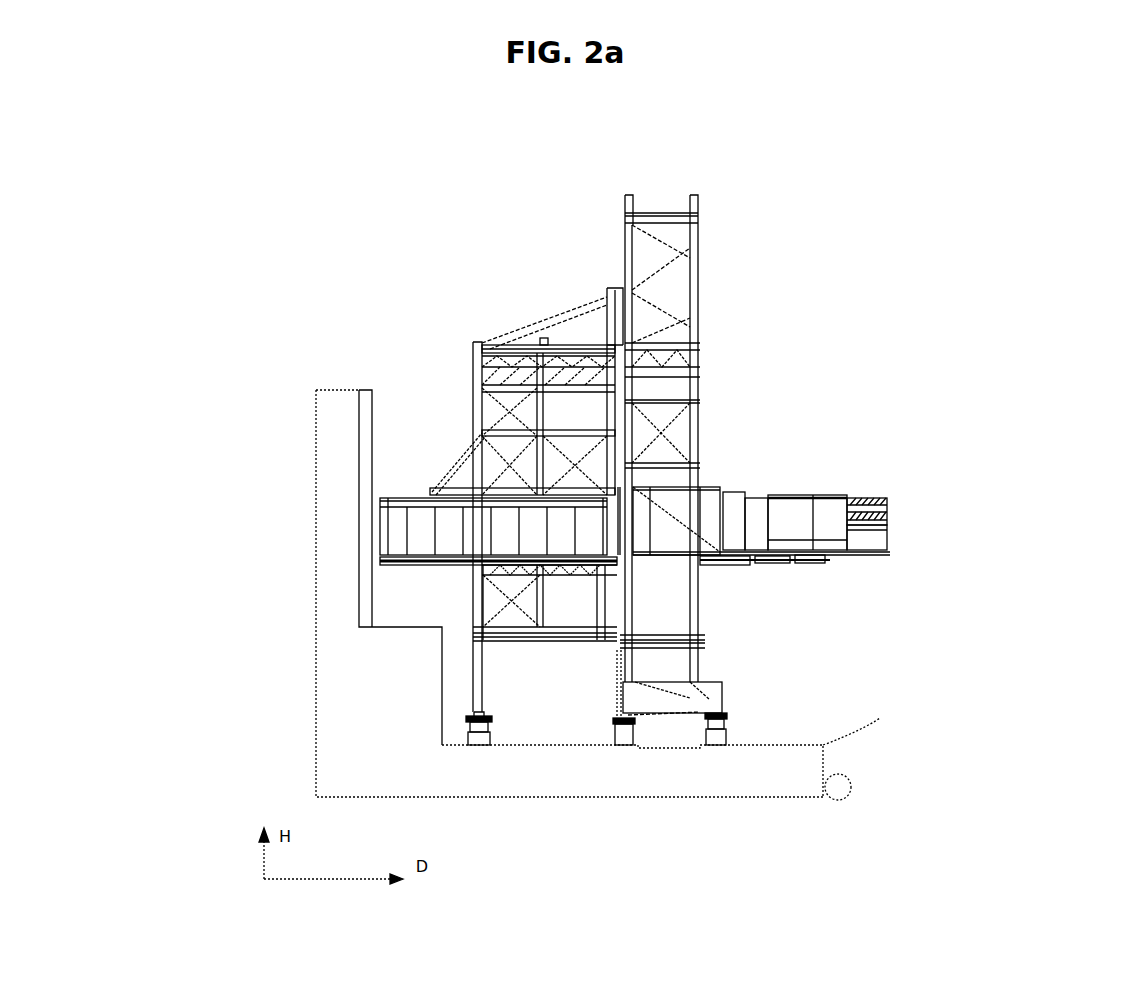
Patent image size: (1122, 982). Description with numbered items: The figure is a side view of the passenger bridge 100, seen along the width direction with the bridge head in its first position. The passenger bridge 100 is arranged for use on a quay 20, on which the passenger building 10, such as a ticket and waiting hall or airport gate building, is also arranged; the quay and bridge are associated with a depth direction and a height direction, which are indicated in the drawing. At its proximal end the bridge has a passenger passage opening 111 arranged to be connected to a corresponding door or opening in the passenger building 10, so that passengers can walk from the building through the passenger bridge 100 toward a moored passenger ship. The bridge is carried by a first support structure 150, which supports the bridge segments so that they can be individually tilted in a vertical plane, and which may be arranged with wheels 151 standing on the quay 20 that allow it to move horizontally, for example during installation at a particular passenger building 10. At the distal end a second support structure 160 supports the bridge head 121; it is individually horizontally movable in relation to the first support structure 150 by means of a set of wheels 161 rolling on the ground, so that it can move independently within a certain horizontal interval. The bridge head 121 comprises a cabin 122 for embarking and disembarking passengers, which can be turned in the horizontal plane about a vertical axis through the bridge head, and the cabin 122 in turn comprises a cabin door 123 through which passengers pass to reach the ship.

The passenger bridge 100 is at (478, 244).
The first support structure 150 is at (478, 342).
The passenger passage opening 111 is at (388, 500).
The passenger building 10 is at (313, 595).
The bridge head 121 is at (817, 492).
The cabin 122 is at (888, 498).
The cabin door 123 is at (888, 518).
The second support structure 160 is at (700, 580).
The quay 20 is at (830, 745).
The wheels 151 is at (490, 738).
The wheels 161 is at (718, 745).